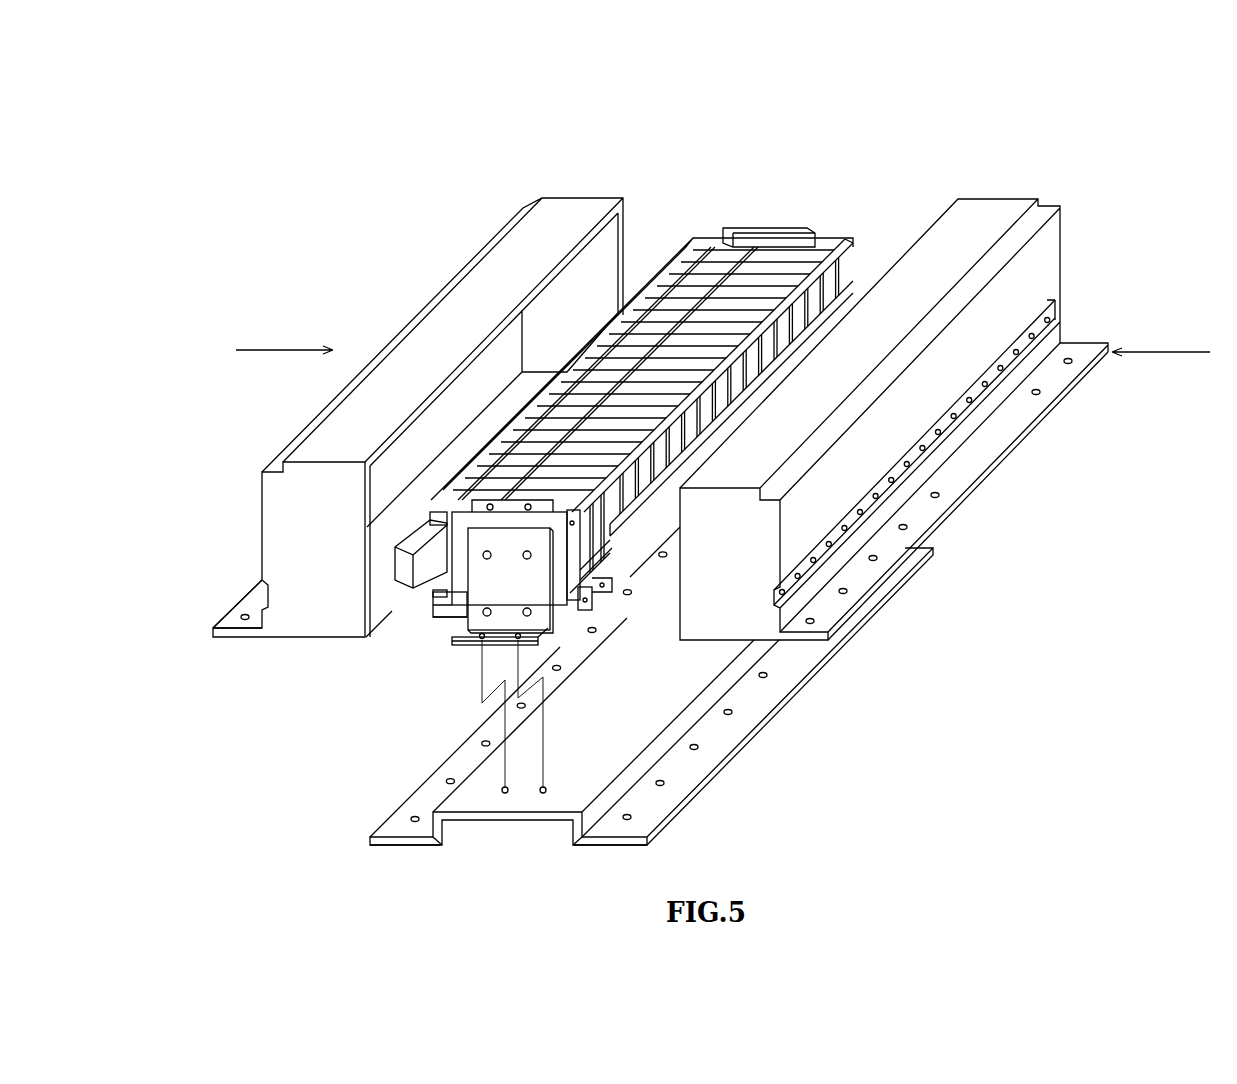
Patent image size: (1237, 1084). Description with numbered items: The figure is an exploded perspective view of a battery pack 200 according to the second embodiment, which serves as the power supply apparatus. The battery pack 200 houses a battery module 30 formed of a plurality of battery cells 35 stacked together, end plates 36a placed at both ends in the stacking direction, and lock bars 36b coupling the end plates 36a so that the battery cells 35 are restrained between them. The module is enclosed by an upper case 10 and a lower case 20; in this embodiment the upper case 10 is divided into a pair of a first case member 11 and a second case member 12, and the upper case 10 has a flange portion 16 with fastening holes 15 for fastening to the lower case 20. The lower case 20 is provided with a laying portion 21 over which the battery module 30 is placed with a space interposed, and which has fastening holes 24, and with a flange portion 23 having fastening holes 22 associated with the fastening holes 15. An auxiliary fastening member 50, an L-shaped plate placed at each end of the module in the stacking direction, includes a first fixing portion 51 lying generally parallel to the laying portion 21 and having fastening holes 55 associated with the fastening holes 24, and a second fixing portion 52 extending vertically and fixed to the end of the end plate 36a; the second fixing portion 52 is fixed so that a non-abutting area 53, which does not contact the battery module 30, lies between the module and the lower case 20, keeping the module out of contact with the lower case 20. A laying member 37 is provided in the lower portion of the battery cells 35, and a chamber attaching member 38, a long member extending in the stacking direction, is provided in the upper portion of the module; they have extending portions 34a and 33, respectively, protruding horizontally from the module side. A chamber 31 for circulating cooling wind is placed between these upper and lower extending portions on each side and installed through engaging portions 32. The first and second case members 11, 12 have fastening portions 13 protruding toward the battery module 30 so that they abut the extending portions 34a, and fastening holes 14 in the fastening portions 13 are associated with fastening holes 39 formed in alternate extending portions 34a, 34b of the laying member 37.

The battery pack 200 is at (858, 134).
The upper case 10 is at (654, 390).
The first case member 11 is at (564, 188).
The second case member 12 is at (1008, 190).
The fastening portion 13 is at (1060, 304).
The fastening holes 14 is at (1054, 321).
The fastening holes 15 is at (241, 617).
The flange portion 16 is at (256, 597).
The lower case 20 is at (786, 718).
The laying portion 21 is at (508, 806).
The fastening holes 22 is at (412, 818).
The flange portion 23 is at (430, 788).
The fastening holes 24 is at (542, 795).
The battery module 30 is at (767, 223).
The chamber 31 is at (911, 247).
The engaging portions 32 is at (440, 521).
The extending portion 33 is at (683, 376).
The extending portions 34a is at (437, 607).
The alternate extending portions 34b is at (600, 588).
The battery cells 35 is at (677, 290).
The end plates 36a is at (776, 232).
The lock bars 36b is at (722, 270).
The laying member 37 is at (440, 627).
The chamber attaching member 38 is at (690, 275).
The fastening holes 39 is at (586, 620).
The auxiliary fastening member 50 is at (468, 646).
The first fixing portion 51 is at (455, 641).
The second fixing portion 52 is at (548, 625).
The non-abutting area 53 is at (540, 630).
The fastening holes 55 is at (480, 640).